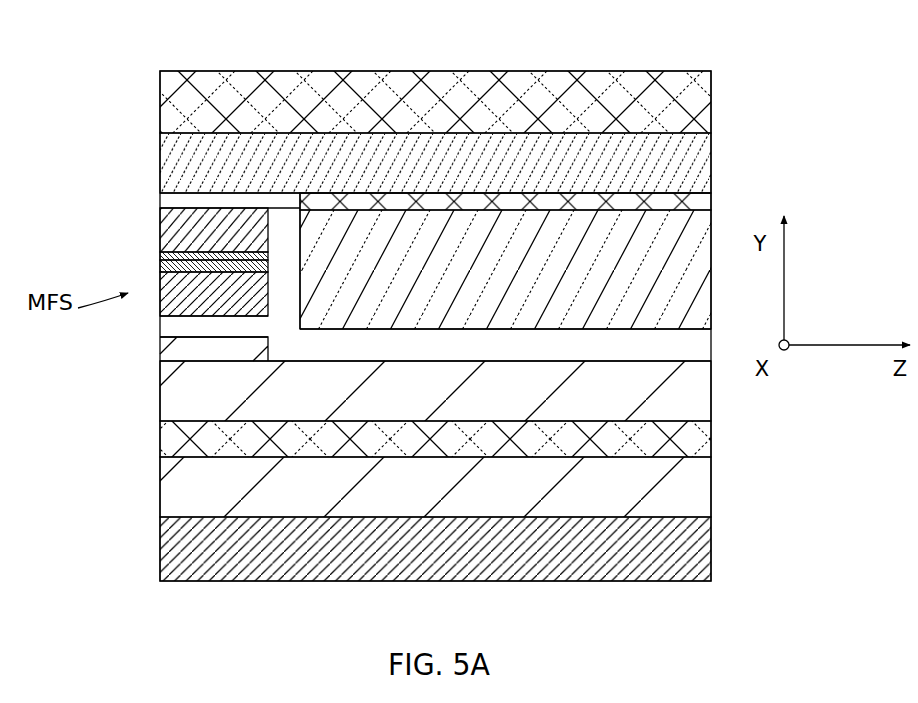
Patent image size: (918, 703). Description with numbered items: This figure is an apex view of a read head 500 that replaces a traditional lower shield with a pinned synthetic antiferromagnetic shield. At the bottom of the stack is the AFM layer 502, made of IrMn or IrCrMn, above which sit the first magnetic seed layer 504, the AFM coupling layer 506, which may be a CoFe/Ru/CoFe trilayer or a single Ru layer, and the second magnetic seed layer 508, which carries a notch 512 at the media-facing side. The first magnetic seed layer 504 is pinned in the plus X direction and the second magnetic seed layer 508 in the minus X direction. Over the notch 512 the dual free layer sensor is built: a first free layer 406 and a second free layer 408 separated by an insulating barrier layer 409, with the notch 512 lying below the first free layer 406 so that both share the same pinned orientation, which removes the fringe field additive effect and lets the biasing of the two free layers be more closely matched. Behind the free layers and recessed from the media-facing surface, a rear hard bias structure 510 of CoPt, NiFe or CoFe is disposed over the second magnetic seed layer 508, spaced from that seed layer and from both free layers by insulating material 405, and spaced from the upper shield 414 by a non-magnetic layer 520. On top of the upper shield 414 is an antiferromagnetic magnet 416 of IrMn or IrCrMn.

The read head 500 is at (157, 45).
The antiferromagnetic magnet 416 is at (421, 108).
The upper shield 414 is at (416, 178).
The non-magnetic layer 520 is at (714, 200).
The rear hard bias structure 510 is at (482, 282).
The insulating material 405 is at (481, 355).
The second free layer 408 is at (197, 244).
The barrier layer 409 is at (294, 262).
The first free layer 406 is at (197, 302).
The notch 512 is at (158, 350).
The second magnetic seed layer 508 is at (481, 400).
The AFM coupling layer 506 is at (481, 448).
The first magnetic seed layer 504 is at (481, 497).
The AFM layer 502 is at (481, 559).